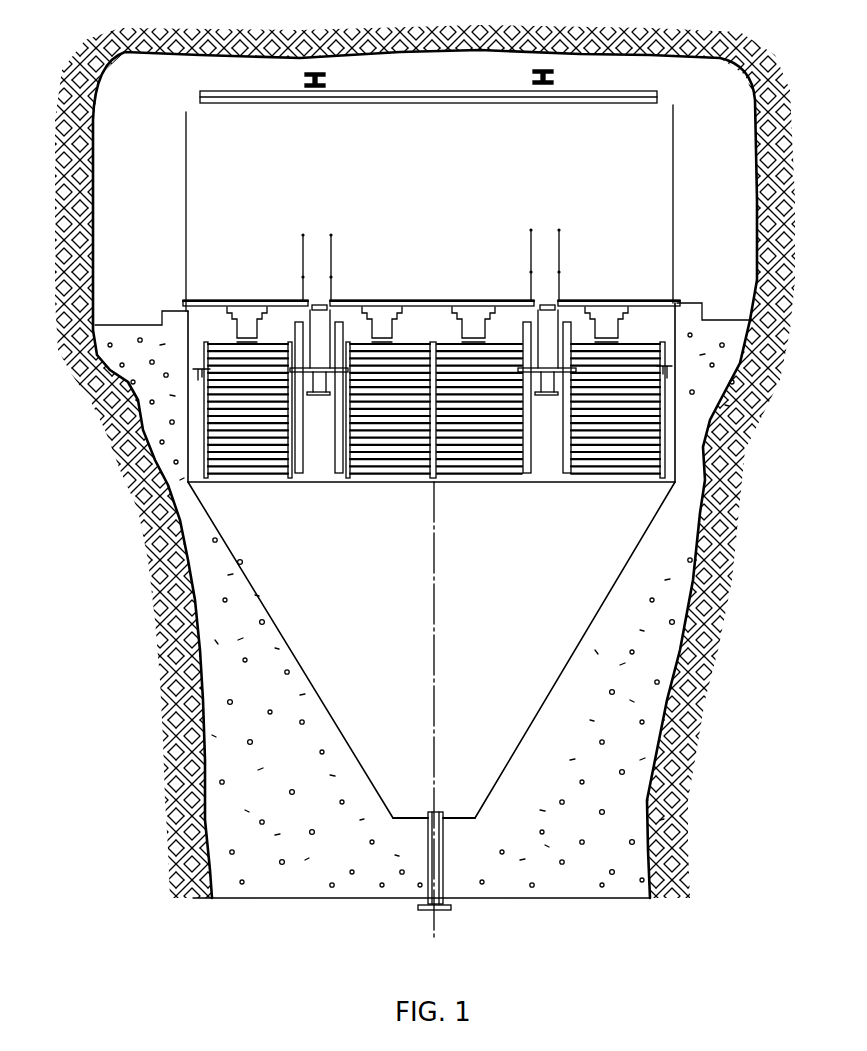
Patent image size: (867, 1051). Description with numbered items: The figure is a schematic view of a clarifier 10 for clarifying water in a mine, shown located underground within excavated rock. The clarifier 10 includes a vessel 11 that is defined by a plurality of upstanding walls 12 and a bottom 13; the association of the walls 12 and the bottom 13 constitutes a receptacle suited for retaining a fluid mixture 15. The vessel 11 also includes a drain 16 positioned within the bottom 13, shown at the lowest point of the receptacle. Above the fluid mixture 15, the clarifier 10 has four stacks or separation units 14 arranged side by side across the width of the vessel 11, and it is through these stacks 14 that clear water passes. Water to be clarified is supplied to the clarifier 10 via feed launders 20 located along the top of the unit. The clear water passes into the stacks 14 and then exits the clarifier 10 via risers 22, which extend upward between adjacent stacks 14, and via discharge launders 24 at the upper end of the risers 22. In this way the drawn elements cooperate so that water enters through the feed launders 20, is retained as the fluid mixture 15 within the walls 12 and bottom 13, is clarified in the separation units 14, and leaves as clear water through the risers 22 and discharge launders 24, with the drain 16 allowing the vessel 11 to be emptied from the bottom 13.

The clarifier 10 is at (652, 116).
The vessel 11 is at (273, 622).
The upstanding walls 12 is at (186, 432).
The bottom 13 is at (403, 816).
The stacks or separation units 14 is at (256, 480).
The fluid mixture 15 is at (480, 641).
The drain 16 is at (438, 811).
The feed launders 20 is at (393, 307).
The risers 22 is at (307, 453).
The discharge launders 24 is at (320, 334).